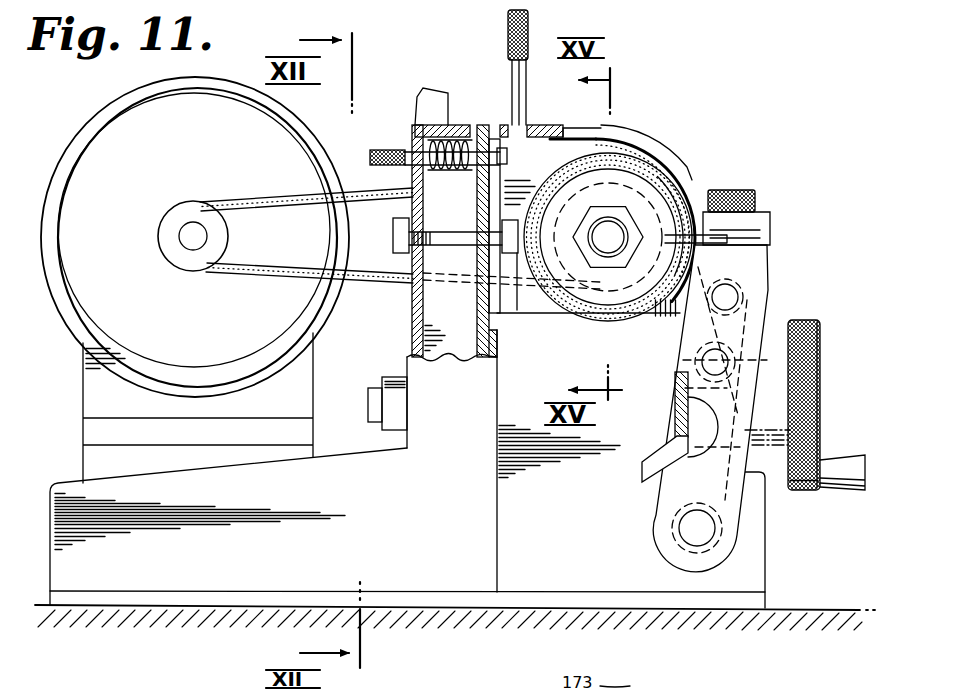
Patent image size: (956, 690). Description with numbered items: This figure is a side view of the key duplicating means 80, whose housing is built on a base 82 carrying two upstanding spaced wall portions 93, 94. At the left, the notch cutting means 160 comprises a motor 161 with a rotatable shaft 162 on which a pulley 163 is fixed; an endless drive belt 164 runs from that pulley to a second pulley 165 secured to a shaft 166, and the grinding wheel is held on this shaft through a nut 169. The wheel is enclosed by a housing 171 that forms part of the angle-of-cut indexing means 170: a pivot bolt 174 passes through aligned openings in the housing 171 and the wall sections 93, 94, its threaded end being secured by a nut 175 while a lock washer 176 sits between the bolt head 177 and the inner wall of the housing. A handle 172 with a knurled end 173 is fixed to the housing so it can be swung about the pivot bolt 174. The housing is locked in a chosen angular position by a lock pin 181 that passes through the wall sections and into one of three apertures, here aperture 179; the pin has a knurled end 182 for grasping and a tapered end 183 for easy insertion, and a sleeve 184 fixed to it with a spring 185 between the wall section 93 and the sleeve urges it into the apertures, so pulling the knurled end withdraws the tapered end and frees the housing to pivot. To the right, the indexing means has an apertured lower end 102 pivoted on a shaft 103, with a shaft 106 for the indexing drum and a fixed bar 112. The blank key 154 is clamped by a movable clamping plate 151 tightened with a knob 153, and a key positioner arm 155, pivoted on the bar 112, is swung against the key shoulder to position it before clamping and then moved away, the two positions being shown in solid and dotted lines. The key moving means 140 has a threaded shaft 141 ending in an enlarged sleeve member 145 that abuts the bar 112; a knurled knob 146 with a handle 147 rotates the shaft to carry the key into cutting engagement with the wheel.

The duplicating means 80 is at (438, 492).
The base 82 is at (126, 572).
The upstanding wall portion 93 is at (412, 347).
The upstanding wall portion 94 is at (483, 358).
The apertured lower end 102 is at (712, 562).
The shaft 103 is at (667, 534).
The shaft 106 is at (740, 297).
The bar 112 is at (668, 362).
The key moving means 140 is at (832, 372).
The shaft 141 is at (370, 403).
The sleeve member 145 is at (775, 405).
The knurled knob 146 is at (806, 492).
The handle 147 is at (858, 480).
The clamping plate 151 is at (772, 228).
The knob 153 is at (760, 196).
The blank key 154 is at (727, 242).
The key positioner arm 155 is at (640, 470).
The notch cutting means 160 is at (668, 154).
The motor 161 is at (195, 237).
The rotatable shaft 162 is at (190, 240).
The pulley 163 is at (176, 220).
The endless drive belt 164 is at (278, 200).
The pulley 165 is at (640, 156).
The shaft 166 is at (613, 246).
The nut 169 is at (577, 268).
The angle-of-cut indexing means 170 is at (640, 112).
The housing 171 is at (618, 126).
The handle 172 is at (523, 97).
The knurled end 173 is at (530, 22).
The pivot bolt 174 is at (453, 238).
The nut 175 is at (398, 252).
The lock washer 176 is at (505, 222).
The bolt head 177 is at (502, 318).
The aperture 179 is at (490, 152).
The lock pin 181 is at (410, 152).
The knurled end 182 is at (372, 158).
The tapered end 183 is at (508, 158).
The sleeve 184 is at (462, 140).
The spring 185 is at (446, 120).